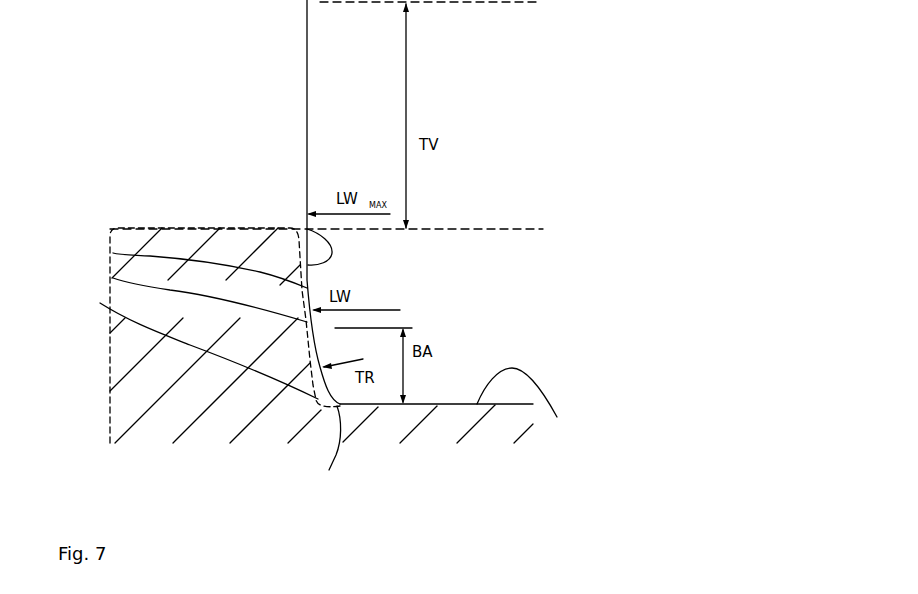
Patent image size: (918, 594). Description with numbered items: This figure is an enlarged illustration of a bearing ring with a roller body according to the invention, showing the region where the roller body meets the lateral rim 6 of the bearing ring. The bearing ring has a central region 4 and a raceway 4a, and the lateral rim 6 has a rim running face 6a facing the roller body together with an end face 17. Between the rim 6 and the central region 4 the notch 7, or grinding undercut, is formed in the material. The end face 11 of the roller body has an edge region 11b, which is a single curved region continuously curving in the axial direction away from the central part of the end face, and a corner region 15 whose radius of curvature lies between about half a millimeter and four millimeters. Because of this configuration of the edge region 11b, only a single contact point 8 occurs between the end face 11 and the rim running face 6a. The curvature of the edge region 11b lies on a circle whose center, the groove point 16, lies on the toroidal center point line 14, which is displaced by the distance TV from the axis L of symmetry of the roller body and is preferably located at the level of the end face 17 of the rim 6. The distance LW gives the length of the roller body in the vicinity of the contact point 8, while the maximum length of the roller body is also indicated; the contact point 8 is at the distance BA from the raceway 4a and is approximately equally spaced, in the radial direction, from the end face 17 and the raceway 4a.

The central region of the bearing ring 4 is at (453, 428).
The raceway 4a is at (526, 402).
The lateral rim 6 is at (178, 253).
The rim running face 6a is at (307, 230).
The notch 7 is at (202, 370).
The contact point 8 is at (113, 278).
The end face of the roller body 11 is at (282, 101).
The edge region of the end face 11b is at (113, 253).
The toroidal center point line 14 is at (543, 229).
The corner region of the roller body 15 is at (335, 450).
The groove point 16 is at (277, 227).
The end face of the rim 17 is at (203, 227).
The axis of symmetry of the roller body L is at (468, 3).